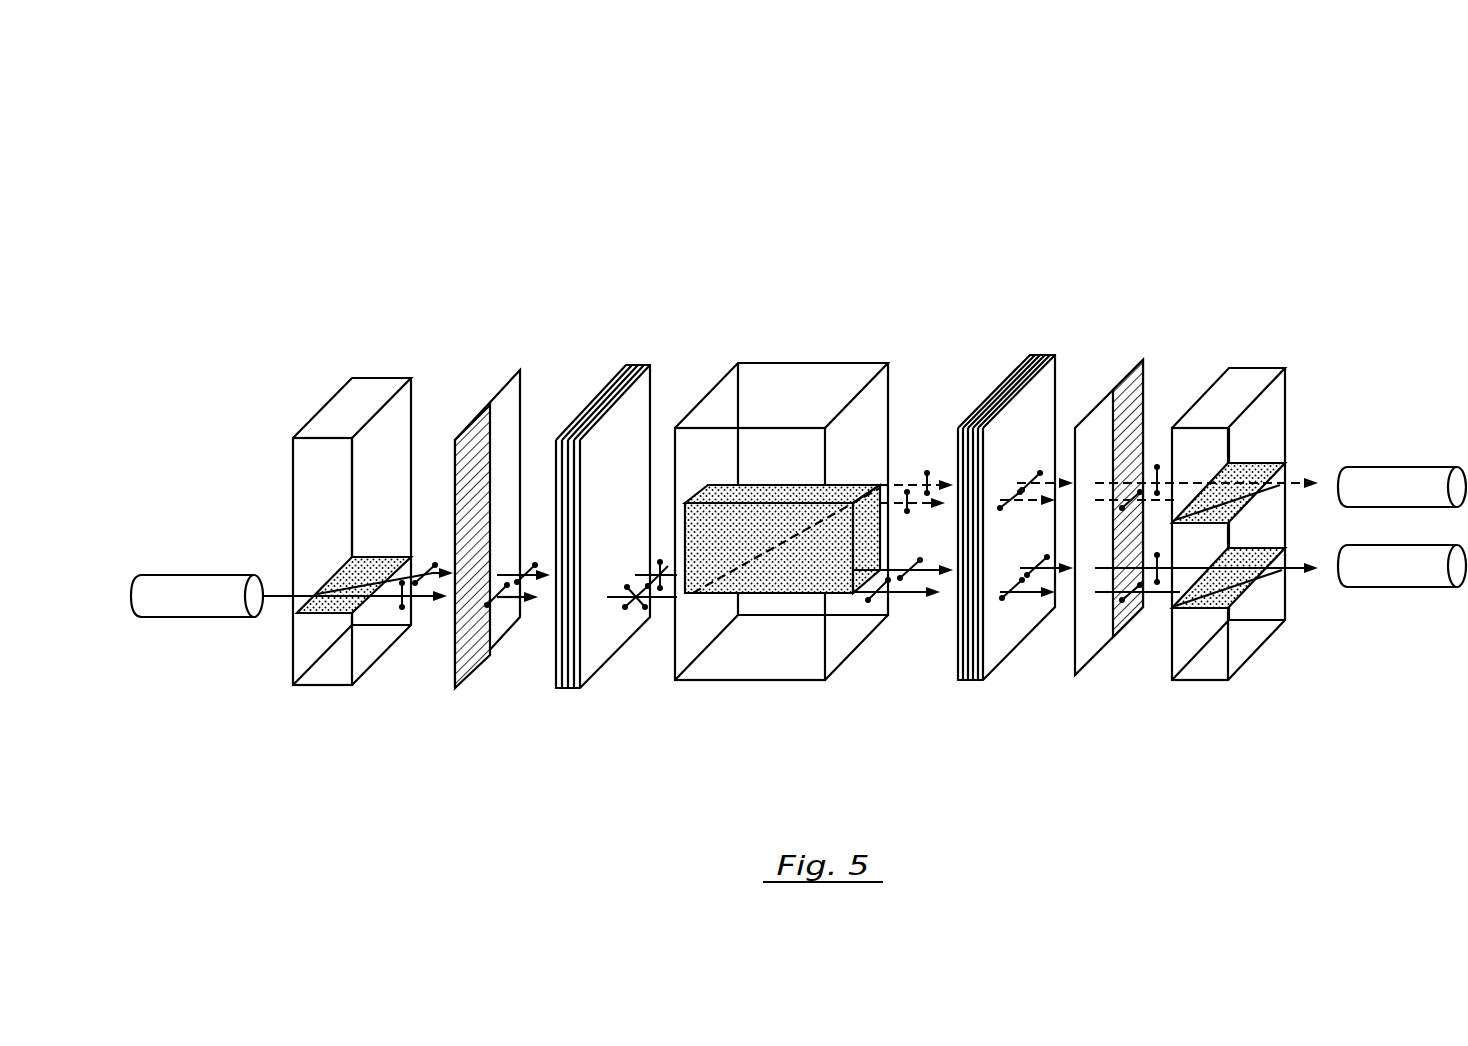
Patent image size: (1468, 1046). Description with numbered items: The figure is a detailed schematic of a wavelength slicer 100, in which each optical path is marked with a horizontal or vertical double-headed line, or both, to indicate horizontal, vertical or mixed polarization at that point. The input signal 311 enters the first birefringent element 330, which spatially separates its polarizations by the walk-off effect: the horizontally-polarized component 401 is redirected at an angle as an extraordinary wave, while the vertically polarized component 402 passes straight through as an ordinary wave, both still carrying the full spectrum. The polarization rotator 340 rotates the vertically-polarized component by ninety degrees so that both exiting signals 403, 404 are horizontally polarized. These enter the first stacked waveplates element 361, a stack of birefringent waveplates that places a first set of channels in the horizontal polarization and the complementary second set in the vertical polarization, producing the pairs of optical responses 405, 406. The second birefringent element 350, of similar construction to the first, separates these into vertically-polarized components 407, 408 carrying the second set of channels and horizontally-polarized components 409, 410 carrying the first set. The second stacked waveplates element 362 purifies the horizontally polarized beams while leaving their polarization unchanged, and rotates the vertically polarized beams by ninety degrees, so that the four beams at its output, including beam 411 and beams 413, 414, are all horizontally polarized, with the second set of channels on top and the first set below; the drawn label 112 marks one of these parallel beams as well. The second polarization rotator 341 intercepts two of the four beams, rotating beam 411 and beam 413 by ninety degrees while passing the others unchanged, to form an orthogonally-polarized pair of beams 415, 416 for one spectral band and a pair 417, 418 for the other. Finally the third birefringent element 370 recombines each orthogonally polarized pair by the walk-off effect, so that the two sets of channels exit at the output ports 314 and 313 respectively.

The wavelength slicer 100 is at (480, 200).
The input signal 311 is at (197, 547).
The first birefringent element 330 is at (378, 376).
The polarization rotator 340 is at (507, 412).
The first stacked waveplates element 361 is at (640, 405).
The second birefringent element 350 is at (790, 390).
The second stacked waveplates element 362 is at (1013, 417).
The second polarization rotator 341 is at (1138, 360).
The third birefringent element 370 is at (1247, 387).
The output port 314 is at (1400, 439).
The output port 313 is at (1402, 585).
The horizontally-polarized component 401 is at (430, 570).
The vertically polarized component 402 is at (433, 609).
The signal exiting the polarization rotator 403 is at (540, 553).
The signal exiting the polarization rotator 404 is at (537, 605).
The optical response 405 is at (640, 560).
The optical response 406 is at (655, 605).
The vertically-polarized component 407 is at (942, 483).
The vertically-polarized component 408 is at (890, 500).
The horizontally-polarized component 409 is at (945, 580).
The horizontally-polarized component 410 is at (900, 607).
The beam 411 is at (1050, 480).
The light beam polarization state 112 is at (1018, 508).
The beam 413 is at (1068, 572).
The beam 414 is at (1027, 599).
The orthogonally-polarized beam 415 is at (1157, 470).
The orthogonally-polarized beam 416 is at (1173, 480).
The orthogonally-polarized beam 417 is at (1158, 590).
The orthogonally-polarized beam 418 is at (1153, 605).